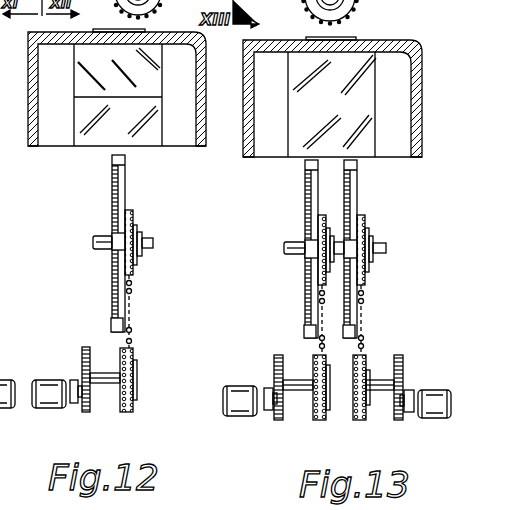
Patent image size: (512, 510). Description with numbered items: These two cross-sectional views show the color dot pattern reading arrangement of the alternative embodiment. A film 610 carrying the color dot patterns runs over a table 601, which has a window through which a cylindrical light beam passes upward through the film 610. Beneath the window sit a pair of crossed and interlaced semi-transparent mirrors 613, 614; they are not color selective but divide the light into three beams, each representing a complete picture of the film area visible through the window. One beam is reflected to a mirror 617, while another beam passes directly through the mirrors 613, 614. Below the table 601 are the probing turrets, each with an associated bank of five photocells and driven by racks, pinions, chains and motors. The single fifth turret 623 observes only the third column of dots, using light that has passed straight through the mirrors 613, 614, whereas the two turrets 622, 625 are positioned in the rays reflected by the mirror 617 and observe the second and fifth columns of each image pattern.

In FIG. 12, the table 601 is at (205, 52).
In FIG. 13, the table 601 is at (422, 46).
In FIG. 13, the film 610 is at (352, 36).
In FIG. 12, the semi-transparent mirror 613 is at (82, 80).
In FIG. 12, the semi-transparent mirror 614 is at (140, 135).
In FIG. 13, the mirror 617 is at (366, 114).
In FIG. 13, the turret 622 is at (305, 188).
In FIG. 12, the fifth turret 623 is at (112, 178).
In FIG. 13, the turret 625 is at (357, 180).